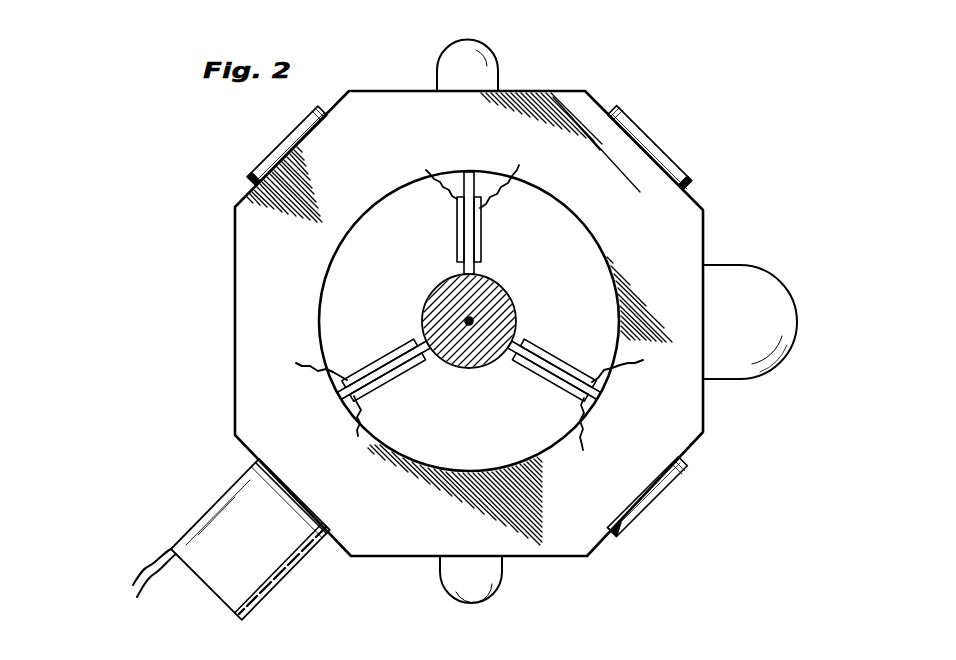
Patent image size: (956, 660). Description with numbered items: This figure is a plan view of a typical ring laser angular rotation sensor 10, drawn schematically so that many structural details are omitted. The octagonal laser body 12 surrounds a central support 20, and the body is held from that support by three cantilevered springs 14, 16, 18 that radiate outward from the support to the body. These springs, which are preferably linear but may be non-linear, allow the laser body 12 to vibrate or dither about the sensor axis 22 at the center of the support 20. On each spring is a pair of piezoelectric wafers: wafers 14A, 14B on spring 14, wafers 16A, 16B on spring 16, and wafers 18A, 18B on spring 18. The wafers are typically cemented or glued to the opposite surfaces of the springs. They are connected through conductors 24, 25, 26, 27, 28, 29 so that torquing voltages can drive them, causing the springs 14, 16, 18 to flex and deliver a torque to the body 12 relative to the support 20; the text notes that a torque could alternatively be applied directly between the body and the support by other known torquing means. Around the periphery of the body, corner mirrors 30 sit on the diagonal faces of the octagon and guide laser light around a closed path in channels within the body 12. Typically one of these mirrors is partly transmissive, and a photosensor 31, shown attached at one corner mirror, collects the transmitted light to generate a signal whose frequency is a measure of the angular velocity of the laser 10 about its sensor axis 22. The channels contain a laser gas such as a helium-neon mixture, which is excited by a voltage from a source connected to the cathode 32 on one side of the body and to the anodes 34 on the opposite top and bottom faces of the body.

The ring laser angular rotation sensor 10 is at (206, 198).
The laser body 12 is at (589, 106).
The cantilevered spring 14 is at (474, 268).
The piezoelectric wafer 14A is at (456, 233).
The piezoelectric wafer 14B is at (481, 222).
The cantilevered spring 16 is at (518, 340).
The piezoelectric wafer 16A is at (558, 362).
The piezoelectric wafer 16B is at (541, 371).
The cantilevered spring 18 is at (424, 351).
The piezoelectric wafer 18A is at (387, 376).
The piezoelectric wafer 18B is at (388, 355).
The support 20 is at (467, 367).
The sensor axis 22 is at (466, 319).
The conductor 24 is at (521, 166).
The conductor 25 is at (430, 172).
The conductor 26 is at (586, 443).
The conductor 27 is at (637, 364).
The conductor 28 is at (355, 428).
The conductor 29 is at (302, 367).
The corner mirror 30 is at (271, 149).
The photosensor 31 is at (282, 580).
The cathode 32 is at (773, 285).
The anode 34 is at (499, 62).